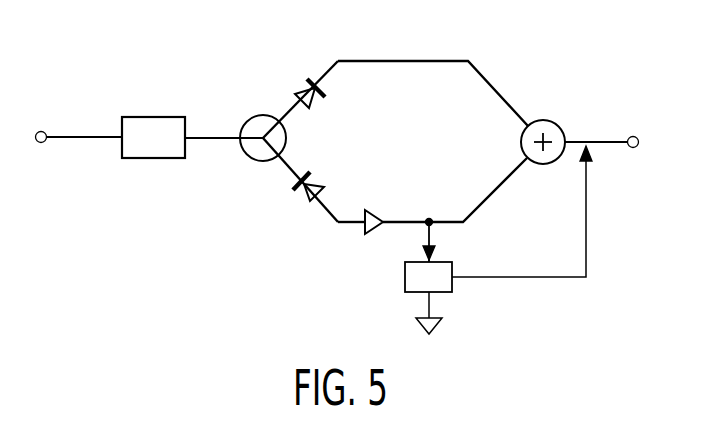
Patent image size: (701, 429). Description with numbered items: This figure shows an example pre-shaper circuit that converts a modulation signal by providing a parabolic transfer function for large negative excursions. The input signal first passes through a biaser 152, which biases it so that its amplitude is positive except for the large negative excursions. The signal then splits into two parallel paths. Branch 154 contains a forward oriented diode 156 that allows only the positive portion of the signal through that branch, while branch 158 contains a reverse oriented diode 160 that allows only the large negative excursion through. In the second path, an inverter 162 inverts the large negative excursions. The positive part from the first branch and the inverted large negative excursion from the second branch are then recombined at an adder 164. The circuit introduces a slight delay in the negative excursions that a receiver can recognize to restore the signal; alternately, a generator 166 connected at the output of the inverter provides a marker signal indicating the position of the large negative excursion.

The biaser 152 is at (152, 117).
The branch 154 is at (423, 10).
The forward oriented diode 156 is at (297, 95).
The branch 158 is at (497, 188).
The reverse oriented diode 160 is at (305, 200).
The inverter 162 is at (363, 228).
The adder 164 is at (552, 120).
The generator 166 is at (405, 283).